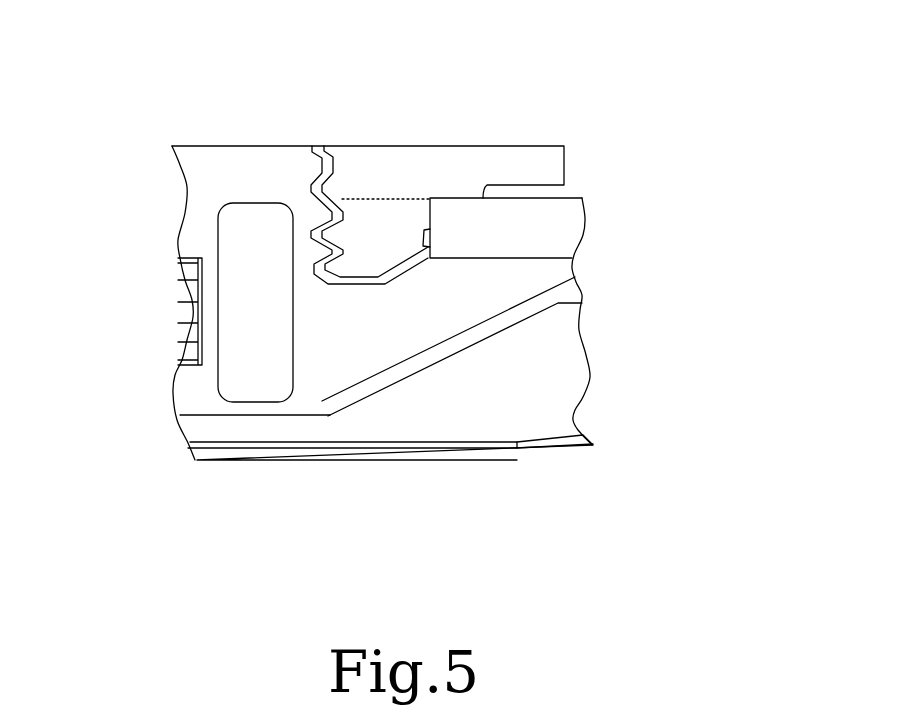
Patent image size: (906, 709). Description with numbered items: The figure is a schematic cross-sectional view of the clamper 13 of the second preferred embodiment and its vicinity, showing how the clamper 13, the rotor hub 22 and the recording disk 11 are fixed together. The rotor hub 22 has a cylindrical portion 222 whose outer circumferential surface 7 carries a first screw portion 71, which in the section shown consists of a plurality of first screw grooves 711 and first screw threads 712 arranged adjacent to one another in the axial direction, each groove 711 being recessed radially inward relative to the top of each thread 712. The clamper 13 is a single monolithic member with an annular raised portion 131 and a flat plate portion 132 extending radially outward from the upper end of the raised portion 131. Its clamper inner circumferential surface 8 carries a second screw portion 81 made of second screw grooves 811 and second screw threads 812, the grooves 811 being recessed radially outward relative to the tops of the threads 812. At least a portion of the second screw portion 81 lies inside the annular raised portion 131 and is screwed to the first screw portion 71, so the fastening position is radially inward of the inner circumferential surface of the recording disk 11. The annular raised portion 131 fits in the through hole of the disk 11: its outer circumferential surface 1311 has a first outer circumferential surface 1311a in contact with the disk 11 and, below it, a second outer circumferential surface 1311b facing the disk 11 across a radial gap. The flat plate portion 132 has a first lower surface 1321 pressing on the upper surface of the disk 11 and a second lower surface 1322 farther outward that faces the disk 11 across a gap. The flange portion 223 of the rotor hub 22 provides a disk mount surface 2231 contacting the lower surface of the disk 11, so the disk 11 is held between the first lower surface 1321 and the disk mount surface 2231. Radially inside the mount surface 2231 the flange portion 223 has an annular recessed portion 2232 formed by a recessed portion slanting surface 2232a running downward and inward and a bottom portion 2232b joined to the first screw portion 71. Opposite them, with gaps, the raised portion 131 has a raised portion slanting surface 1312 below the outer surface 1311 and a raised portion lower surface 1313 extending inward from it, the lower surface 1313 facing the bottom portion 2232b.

The clamper 13 is at (520, 72).
The annular raised portion 131 is at (334, 183).
The flat plate portion 132 is at (532, 167).
The annular raised portion outer circumferential surface 1311 is at (796, 246).
The first outer circumferential surface 1311a is at (432, 230).
The second outer circumferential surface 1311b is at (482, 258).
The first lower surface 1321 is at (432, 200).
The second lower surface 1322 is at (540, 187).
The recording disk 11 is at (432, 203).
The outer circumferential surface 7 is at (312, 146).
The first screw portion 71 is at (294, 148).
The first screw grooves 711 is at (310, 190).
The first screw threads 712 is at (320, 210).
The clamper inner circumferential surface 8 is at (324, 148).
The second screw portion 81 is at (326, 152).
The second screw grooves 811 is at (334, 168).
The second screw threads 812 is at (378, 222).
The rotor hub 22 is at (208, 542).
The cylindrical portion 222 is at (303, 340).
The flange portion 223 is at (449, 298).
The disk mount surface 2231 is at (468, 248).
The annular recessed portion 2232 is at (412, 580).
The recessed portion slanting surface 2232a is at (427, 262).
The bottom portion 2232b is at (363, 290).
The raised portion slanting surface 1312 is at (402, 290).
The raised portion lower surface 1313 is at (348, 287).